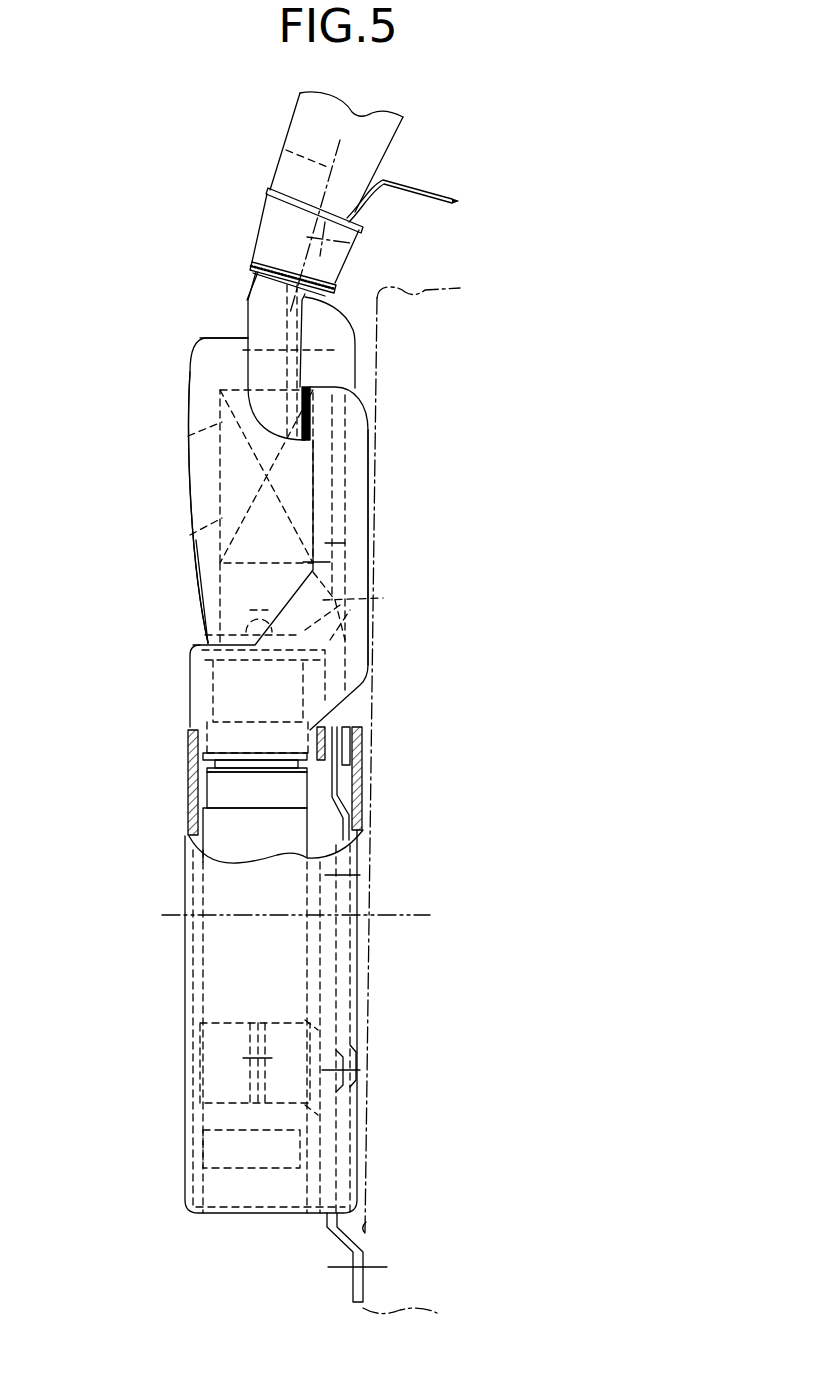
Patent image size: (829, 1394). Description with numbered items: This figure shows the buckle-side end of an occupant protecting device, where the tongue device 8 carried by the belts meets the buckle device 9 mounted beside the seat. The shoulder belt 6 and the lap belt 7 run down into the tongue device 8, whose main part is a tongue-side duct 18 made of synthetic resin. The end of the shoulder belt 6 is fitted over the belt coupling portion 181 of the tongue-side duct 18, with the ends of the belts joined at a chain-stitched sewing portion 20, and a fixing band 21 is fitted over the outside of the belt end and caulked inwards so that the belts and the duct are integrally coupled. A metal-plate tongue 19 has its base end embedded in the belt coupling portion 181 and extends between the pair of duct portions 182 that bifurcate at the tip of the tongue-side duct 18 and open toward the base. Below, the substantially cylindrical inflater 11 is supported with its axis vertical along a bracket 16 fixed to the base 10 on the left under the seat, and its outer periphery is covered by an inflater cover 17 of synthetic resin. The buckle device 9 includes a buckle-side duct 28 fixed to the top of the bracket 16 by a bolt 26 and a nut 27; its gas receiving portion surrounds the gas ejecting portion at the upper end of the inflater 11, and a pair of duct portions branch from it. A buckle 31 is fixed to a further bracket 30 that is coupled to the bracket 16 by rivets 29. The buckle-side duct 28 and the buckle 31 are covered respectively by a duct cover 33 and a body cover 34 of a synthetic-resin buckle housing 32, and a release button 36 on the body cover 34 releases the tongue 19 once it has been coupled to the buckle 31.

The shoulder belt 6 is at (283, 148).
The lap belt 7 is at (425, 188).
The tongue device 8 is at (352, 283).
The buckle device 9 is at (178, 500).
The base 10 is at (367, 1232).
The inflater 11 is at (207, 792).
The bracket 16 is at (325, 793).
The inflater cover 17 is at (185, 887).
The tongue-side duct 18 is at (247, 295).
The belt coupling portion 181 is at (350, 165).
The duct portion 182 is at (243, 350).
The tongue 19 is at (262, 483).
The sewing portion 20 is at (255, 260).
The fixing band 21 is at (268, 218).
The bolt 26 is at (240, 597).
The nut 27 is at (210, 628).
The buckle-side duct 28 is at (185, 693).
The rivet 29 is at (347, 747).
The bracket 30 is at (382, 593).
The buckle 31 is at (200, 536).
The buckle housing 32 is at (180, 460).
The duct cover 33 is at (367, 470).
The body cover 34 is at (205, 555).
The release button 36 is at (200, 375).